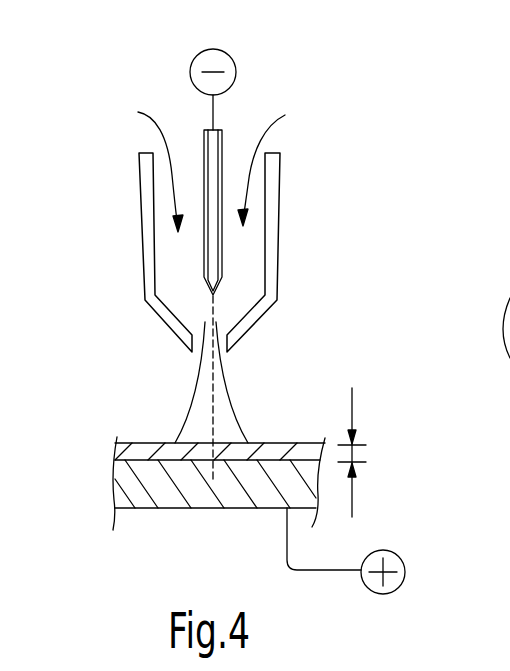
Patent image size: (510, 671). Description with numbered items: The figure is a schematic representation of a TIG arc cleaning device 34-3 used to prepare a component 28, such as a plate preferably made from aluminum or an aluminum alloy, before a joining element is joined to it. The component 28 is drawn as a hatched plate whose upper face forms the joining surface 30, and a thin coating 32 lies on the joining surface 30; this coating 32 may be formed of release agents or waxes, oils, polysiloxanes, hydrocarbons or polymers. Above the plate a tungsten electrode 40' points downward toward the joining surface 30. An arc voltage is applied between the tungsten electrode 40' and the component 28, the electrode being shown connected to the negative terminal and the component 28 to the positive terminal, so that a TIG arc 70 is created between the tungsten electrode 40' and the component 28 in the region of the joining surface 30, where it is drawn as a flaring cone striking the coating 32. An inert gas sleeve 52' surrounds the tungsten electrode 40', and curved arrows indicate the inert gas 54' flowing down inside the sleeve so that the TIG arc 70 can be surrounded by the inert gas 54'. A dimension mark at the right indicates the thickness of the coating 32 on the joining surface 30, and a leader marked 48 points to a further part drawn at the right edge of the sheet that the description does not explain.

The tungsten electrode 40' is at (186, 147).
The inert gas 54' is at (161, 171).
The inert gas sleeve 52' is at (158, 252).
The TIG arc cleaning device 34-3 is at (318, 158).
The TIG arc 70 is at (230, 398).
The joining surface 30 is at (228, 440).
The coating 32 is at (122, 450).
The component 28 is at (137, 480).
The adjacent component 48 is at (509, 355).